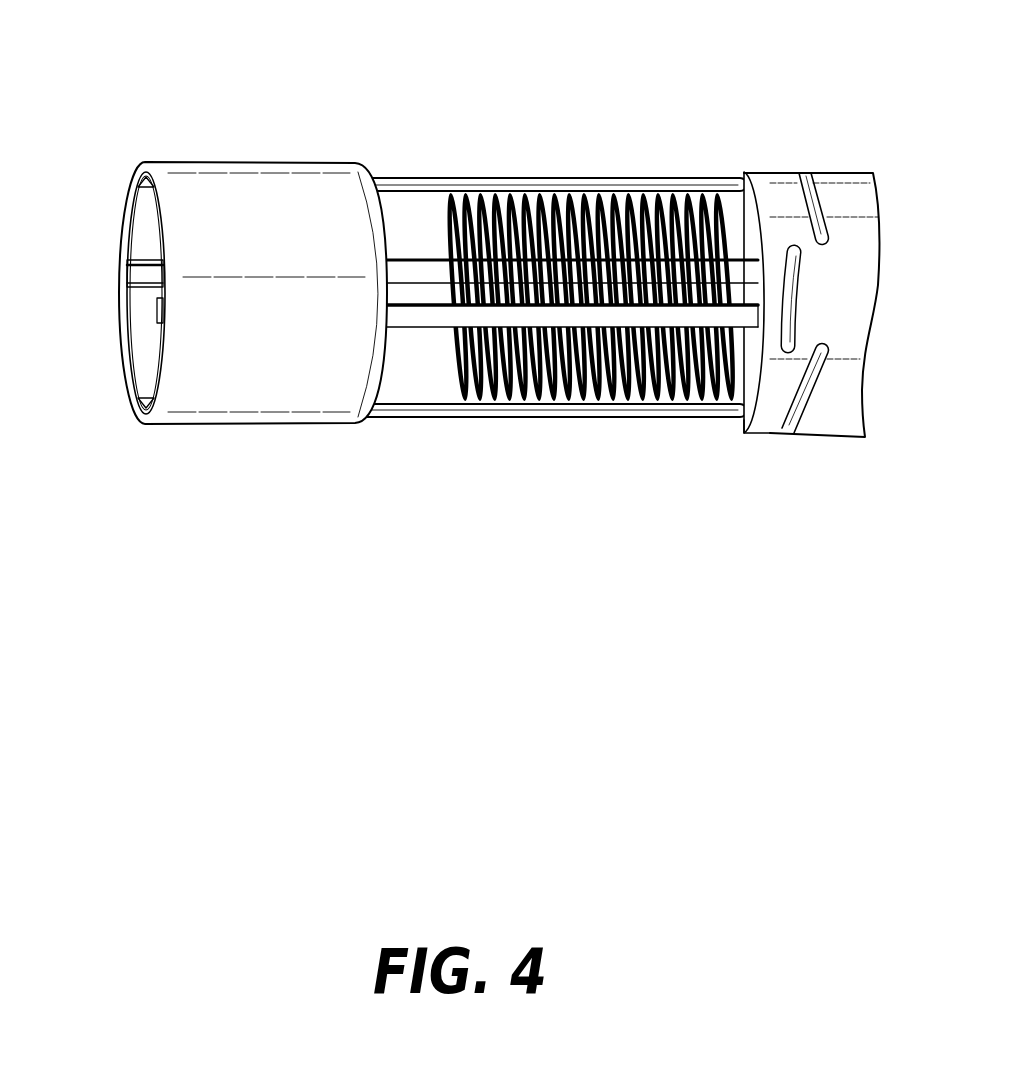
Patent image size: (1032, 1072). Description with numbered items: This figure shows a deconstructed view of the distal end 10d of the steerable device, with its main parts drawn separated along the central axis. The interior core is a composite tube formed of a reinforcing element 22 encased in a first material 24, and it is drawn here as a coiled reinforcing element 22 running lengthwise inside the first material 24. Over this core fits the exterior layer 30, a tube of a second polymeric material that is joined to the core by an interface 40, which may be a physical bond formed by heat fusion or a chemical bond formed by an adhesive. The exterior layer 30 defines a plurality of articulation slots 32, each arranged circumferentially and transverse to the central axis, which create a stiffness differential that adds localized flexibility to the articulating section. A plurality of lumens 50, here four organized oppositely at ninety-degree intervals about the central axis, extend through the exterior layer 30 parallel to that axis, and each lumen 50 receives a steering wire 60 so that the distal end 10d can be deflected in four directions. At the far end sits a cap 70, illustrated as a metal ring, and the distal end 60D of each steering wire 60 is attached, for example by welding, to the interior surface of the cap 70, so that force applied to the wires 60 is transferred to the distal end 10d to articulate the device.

The distal end 10d is at (320, 78).
The reinforcing element 22 is at (614, 250).
The first material 24 is at (743, 399).
The exterior layer 30 is at (864, 186).
The articulation slot 32 is at (785, 433).
The interface 40 is at (762, 226).
The lumen 50 is at (755, 388).
The steering wire 60 is at (448, 322).
The distal end of steering wire 60D is at (158, 305).
The cap 70 is at (247, 385).